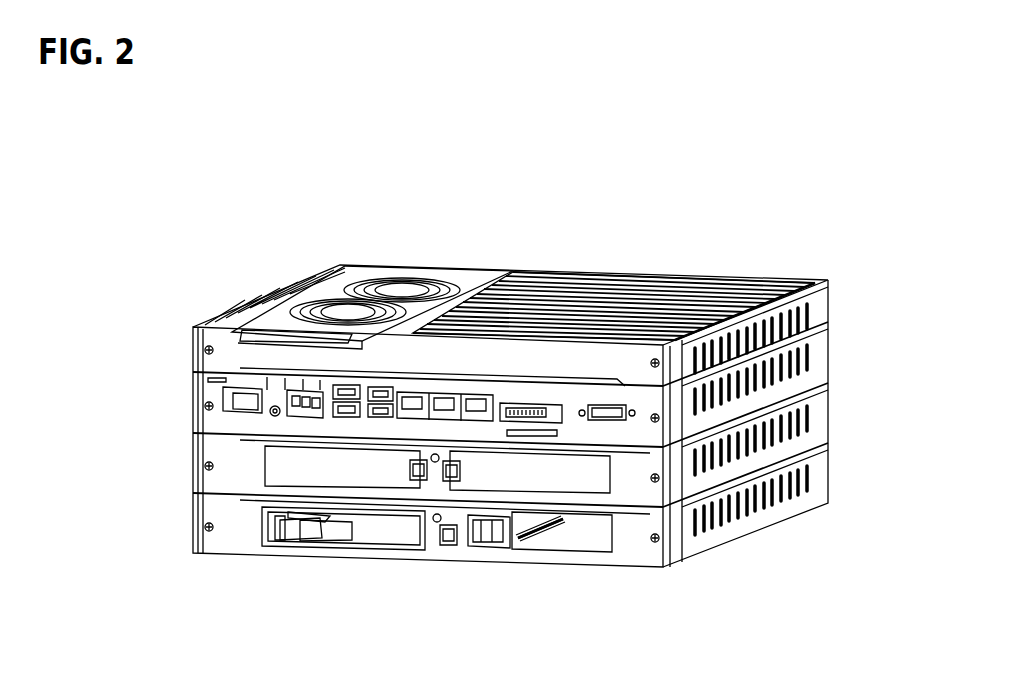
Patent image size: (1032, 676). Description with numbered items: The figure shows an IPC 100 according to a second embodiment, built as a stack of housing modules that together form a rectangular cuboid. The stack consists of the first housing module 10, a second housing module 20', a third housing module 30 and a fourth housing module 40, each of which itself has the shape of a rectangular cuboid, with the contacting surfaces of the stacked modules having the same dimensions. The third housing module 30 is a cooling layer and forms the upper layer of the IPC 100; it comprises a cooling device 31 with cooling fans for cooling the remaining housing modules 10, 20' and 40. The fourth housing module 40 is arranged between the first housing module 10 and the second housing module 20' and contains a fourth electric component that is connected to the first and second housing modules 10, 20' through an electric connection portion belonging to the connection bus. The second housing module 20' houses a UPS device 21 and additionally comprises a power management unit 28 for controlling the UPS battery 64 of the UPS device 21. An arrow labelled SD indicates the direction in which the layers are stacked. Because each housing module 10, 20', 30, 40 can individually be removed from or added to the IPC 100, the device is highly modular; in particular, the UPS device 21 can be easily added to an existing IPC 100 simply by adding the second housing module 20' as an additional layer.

The IPC 100 is at (846, 316).
The third housing module 30 is at (200, 337).
The cooling device 31 is at (452, 283).
The first housing module 10 is at (200, 423).
The fourth housing module 40 is at (200, 482).
The second housing module 20' is at (398, 526).
The power management unit 28 is at (340, 517).
The UPS device 21 is at (560, 521).
The UPS battery 64 is at (540, 528).
The stacking direction SD is at (514, 165).